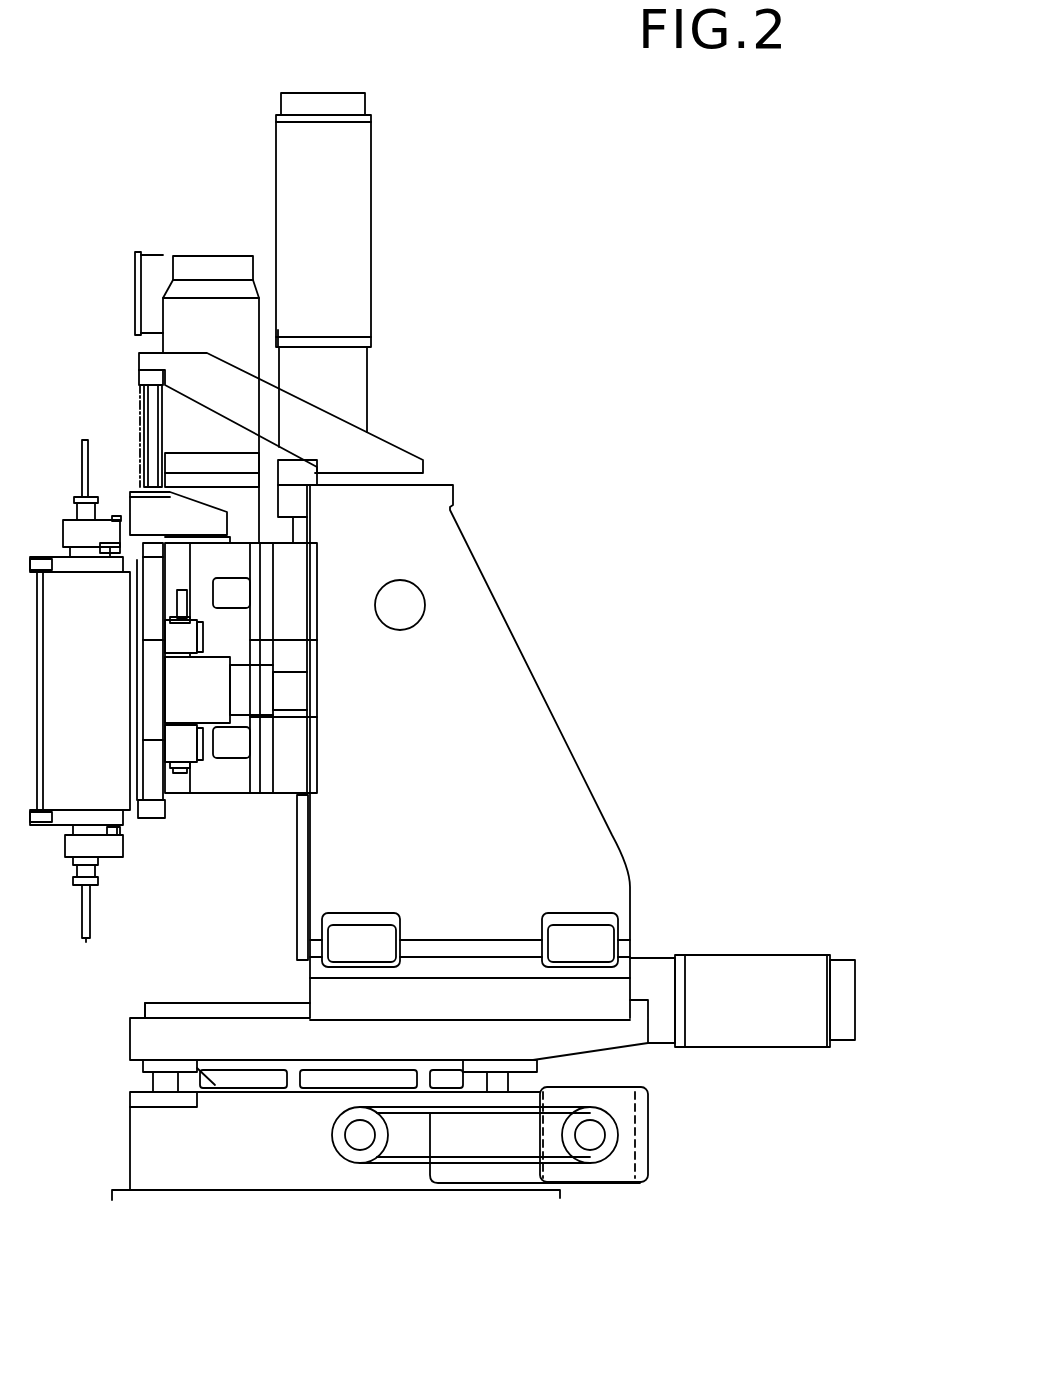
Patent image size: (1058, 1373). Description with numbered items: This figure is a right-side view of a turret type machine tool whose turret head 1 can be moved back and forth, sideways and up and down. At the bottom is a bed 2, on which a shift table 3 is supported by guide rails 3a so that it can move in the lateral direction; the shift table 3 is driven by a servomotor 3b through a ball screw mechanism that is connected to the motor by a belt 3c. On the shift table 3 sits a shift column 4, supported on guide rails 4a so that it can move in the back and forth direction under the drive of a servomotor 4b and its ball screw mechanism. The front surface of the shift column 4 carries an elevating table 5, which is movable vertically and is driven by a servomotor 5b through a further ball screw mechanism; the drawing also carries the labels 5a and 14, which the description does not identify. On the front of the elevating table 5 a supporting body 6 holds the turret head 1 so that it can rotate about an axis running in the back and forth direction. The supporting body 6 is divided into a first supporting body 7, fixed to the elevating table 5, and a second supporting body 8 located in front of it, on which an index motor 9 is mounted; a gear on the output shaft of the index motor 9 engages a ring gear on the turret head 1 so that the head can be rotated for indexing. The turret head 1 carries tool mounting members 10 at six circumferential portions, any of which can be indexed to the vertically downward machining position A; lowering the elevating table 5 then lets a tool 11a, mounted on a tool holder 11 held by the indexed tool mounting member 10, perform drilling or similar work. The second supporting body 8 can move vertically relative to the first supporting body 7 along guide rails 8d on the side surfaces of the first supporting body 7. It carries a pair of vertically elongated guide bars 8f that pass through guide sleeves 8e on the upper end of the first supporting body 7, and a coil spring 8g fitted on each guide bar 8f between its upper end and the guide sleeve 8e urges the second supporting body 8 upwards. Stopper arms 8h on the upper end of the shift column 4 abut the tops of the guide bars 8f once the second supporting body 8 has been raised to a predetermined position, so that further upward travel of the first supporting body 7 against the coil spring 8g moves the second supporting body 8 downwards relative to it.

The turret head 1 is at (68, 818).
The bed 2 is at (143, 1145).
The shift table 3 is at (140, 1038).
The guide rails 3a is at (150, 1080).
The servomotor 3b is at (637, 1146).
The belt 3c is at (405, 1160).
The shift column 4 is at (570, 785).
The guide rails 4a is at (220, 1010).
The servomotor 4b is at (750, 965).
The elevating table 5 is at (255, 795).
The guide rail 5a is at (300, 870).
The servomotor 5b is at (355, 218).
The supporting body 6 is at (180, 800).
The first supporting body 7 is at (215, 795).
The second supporting body 8 is at (150, 812).
The guide rails 8d is at (182, 600).
The guide sleeves 8e is at (140, 510).
The guide bars 8f is at (152, 428).
The coil spring 8g is at (138, 400).
The stopper arms 8h is at (308, 415).
The index motor 9 is at (212, 672).
The tool mounting members 10 is at (70, 830).
The tool holder 11 is at (92, 862).
The tool 11a is at (90, 920).
The feed motor 14 is at (207, 270).
The machining position A is at (68, 870).